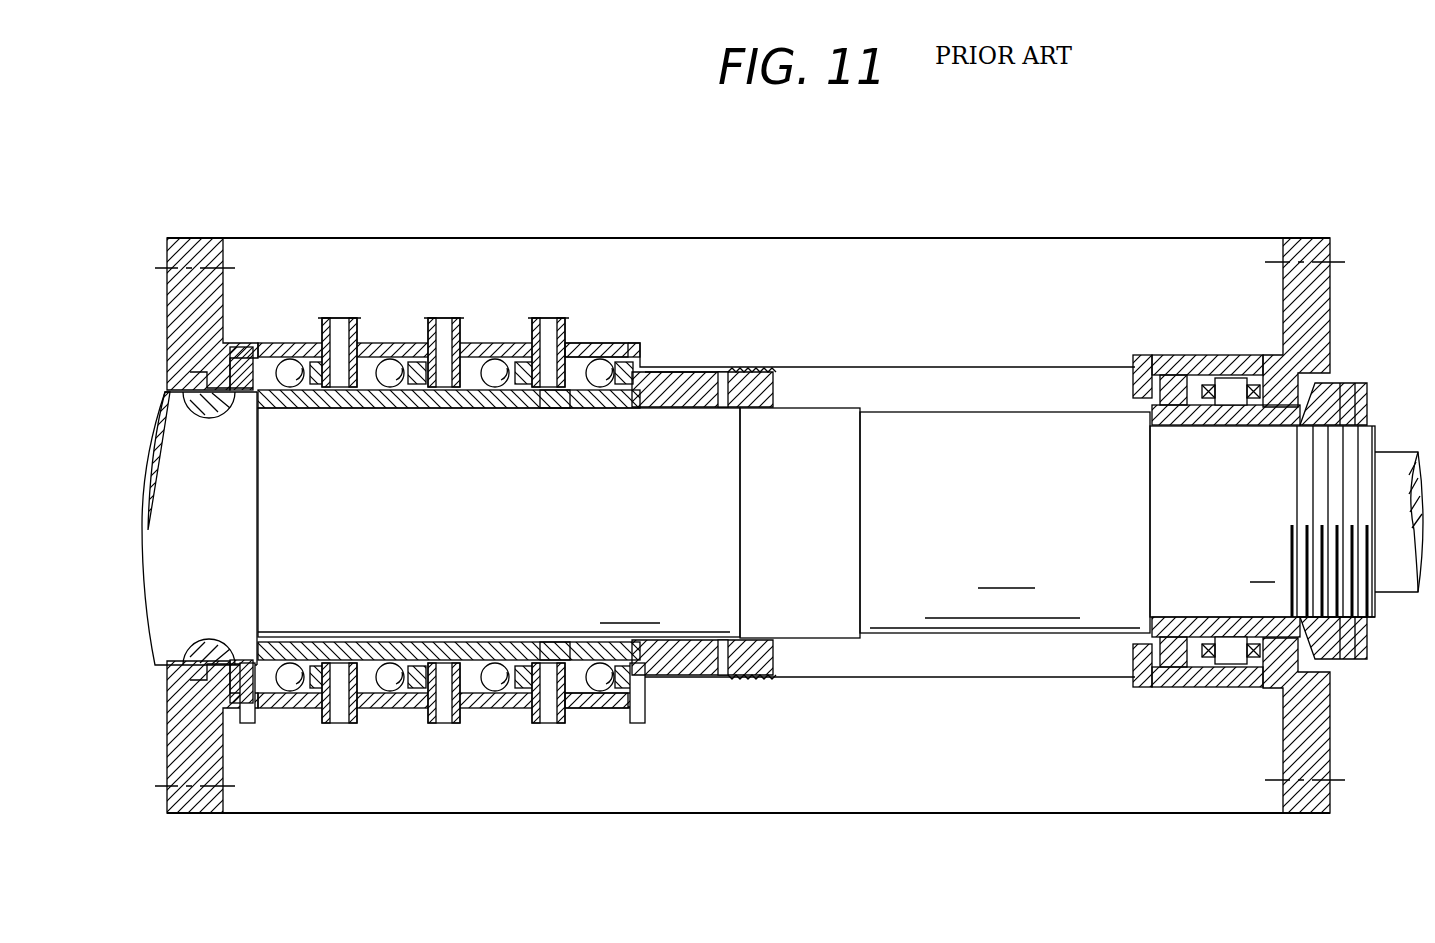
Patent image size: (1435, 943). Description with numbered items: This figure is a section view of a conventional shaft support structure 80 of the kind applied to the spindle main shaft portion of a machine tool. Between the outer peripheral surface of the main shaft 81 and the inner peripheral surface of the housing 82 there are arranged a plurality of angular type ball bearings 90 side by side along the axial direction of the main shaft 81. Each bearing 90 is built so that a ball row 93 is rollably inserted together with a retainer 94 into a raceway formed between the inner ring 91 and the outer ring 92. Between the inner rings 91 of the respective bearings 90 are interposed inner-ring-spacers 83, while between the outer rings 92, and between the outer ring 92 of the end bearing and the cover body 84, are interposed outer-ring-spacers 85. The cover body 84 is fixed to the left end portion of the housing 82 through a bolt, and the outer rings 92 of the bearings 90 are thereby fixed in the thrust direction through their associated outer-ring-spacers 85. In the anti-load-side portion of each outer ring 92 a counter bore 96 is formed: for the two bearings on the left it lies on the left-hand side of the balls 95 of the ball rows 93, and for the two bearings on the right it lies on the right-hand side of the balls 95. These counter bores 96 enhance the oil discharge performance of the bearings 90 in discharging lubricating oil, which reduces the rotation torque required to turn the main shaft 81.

The shaft support structure 80 is at (868, 212).
The main shaft 81 is at (821, 518).
The housing 82 is at (978, 238).
The inner-ring-spacer 83 is at (348, 407).
The cover body 84 is at (180, 322).
The outer-ring-spacer 85 is at (243, 345).
The angular type ball bearing 90 is at (513, 338).
The inner ring 91 is at (487, 408).
The outer ring 92 is at (637, 342).
The ball row 93 is at (597, 340).
The retainer 94 is at (560, 408).
The ball 95 is at (608, 408).
The counter bore 96 is at (493, 340).